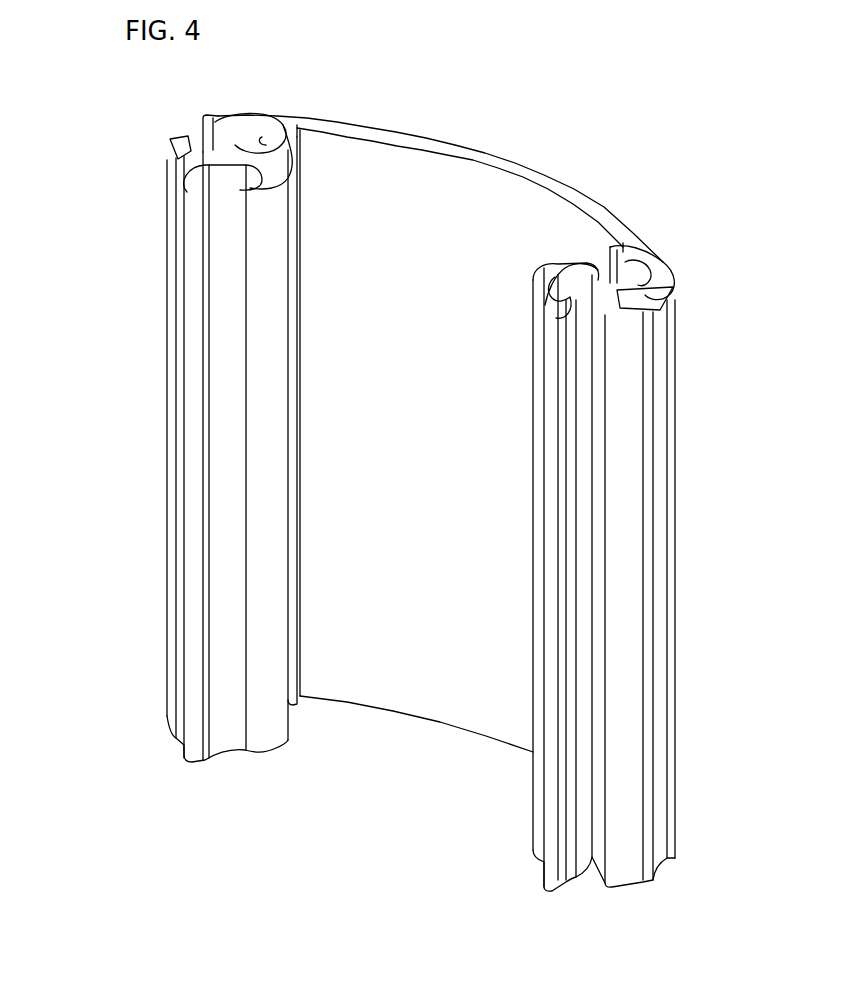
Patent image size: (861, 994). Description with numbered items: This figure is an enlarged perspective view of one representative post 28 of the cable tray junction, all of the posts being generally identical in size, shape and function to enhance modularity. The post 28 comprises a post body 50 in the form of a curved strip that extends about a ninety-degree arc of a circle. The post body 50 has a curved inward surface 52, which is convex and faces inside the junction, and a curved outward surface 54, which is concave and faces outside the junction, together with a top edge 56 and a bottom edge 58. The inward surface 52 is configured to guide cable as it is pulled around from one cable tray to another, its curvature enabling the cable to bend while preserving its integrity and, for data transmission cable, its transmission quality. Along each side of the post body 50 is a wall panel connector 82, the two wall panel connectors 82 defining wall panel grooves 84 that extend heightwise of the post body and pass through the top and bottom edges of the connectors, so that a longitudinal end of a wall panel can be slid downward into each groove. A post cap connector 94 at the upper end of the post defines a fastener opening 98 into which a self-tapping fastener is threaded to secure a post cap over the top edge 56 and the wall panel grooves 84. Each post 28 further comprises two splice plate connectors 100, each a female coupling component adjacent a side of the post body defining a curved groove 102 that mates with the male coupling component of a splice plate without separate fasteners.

The post 28 is at (722, 132).
The post body 50 is at (492, 150).
The inward surface 52 is at (593, 200).
The outward surface 54 is at (382, 166).
The top edge 56 is at (440, 145).
The bottom edge 58 is at (382, 706).
The wall panel connector 82 is at (173, 182).
The wall panel groove 84 is at (238, 140).
The post cap connector 94 is at (255, 115).
The fastener opening 98 is at (263, 141).
The splice plate connector 100 is at (207, 360).
The curved groove 102 is at (232, 158).